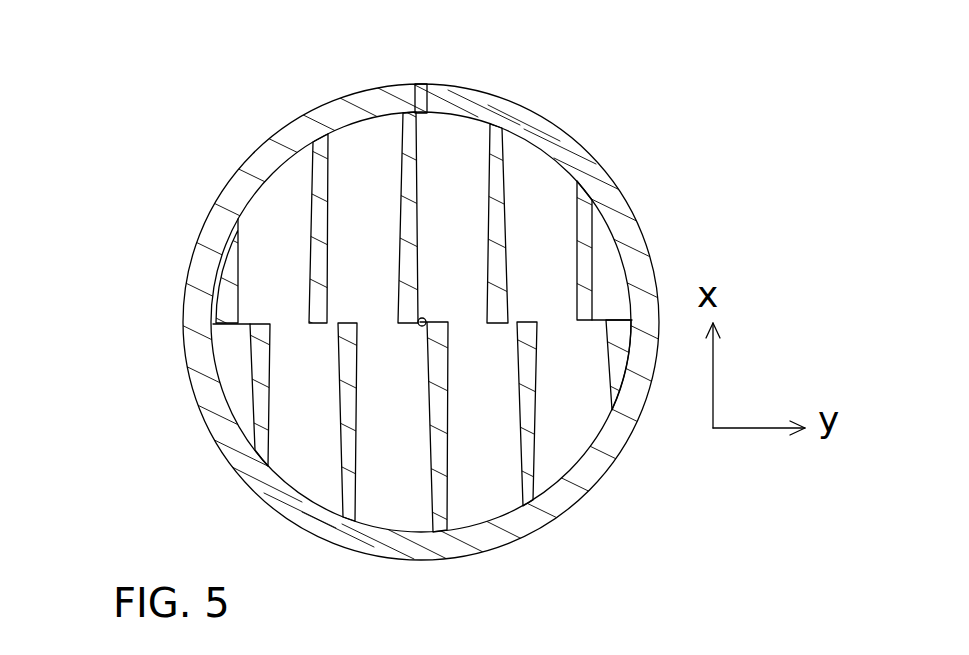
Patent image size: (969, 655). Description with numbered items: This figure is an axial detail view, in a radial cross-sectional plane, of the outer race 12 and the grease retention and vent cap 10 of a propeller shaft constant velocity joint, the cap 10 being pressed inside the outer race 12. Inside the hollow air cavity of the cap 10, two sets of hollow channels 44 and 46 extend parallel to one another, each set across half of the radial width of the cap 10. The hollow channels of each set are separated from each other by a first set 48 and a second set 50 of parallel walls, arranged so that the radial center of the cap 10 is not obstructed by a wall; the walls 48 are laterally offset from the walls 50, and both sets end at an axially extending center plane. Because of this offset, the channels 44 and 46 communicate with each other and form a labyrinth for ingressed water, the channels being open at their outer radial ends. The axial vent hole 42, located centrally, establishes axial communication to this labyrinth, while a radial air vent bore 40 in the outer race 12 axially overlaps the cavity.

The cap 10 is at (595, 245).
The outer race 12 is at (202, 350).
The radial air vent bore 40 is at (423, 112).
The axial vent hole 42 is at (418, 320).
The first set of hollow channels 44 is at (270, 210).
The second set of hollow channels 46 is at (307, 402).
The first set of parallel walls 48 is at (317, 205).
The second set of parallel walls 50 is at (437, 460).